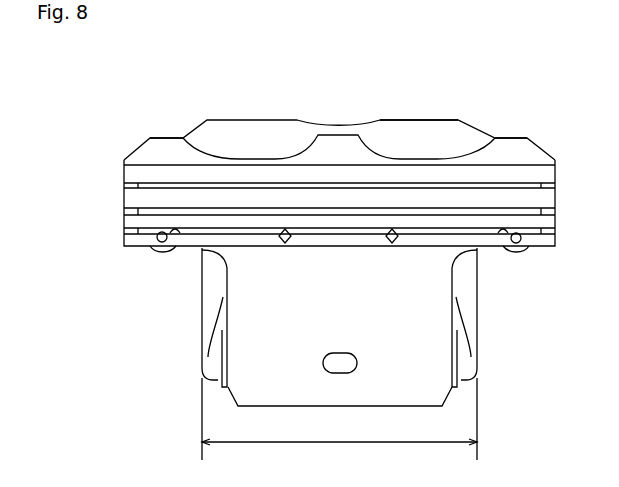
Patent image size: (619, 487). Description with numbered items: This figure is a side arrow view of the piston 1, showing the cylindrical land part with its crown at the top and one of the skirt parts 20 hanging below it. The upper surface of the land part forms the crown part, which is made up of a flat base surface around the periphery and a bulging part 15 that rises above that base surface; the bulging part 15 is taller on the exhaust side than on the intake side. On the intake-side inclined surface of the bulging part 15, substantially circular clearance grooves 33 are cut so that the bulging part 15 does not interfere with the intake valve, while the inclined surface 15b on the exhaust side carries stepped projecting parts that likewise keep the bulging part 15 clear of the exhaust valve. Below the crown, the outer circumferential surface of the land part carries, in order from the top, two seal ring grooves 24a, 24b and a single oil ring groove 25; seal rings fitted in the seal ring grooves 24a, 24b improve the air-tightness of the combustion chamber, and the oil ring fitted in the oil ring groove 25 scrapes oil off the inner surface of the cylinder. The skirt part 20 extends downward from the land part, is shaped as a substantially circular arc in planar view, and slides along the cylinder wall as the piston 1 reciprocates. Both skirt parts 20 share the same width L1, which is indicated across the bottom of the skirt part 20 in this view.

The piston 1 is at (126, 88).
The bulging part 15 is at (192, 133).
The inclined surface on the exhaust side 15b is at (407, 128).
The clearance groove 33 is at (304, 153).
The top ring groove 24a is at (124, 183).
The seal ring groove 24b is at (124, 210).
The oil ring groove 25 is at (124, 231).
The skirt part 20 is at (437, 310).
The width of the skirt parts L1 is at (339, 419).